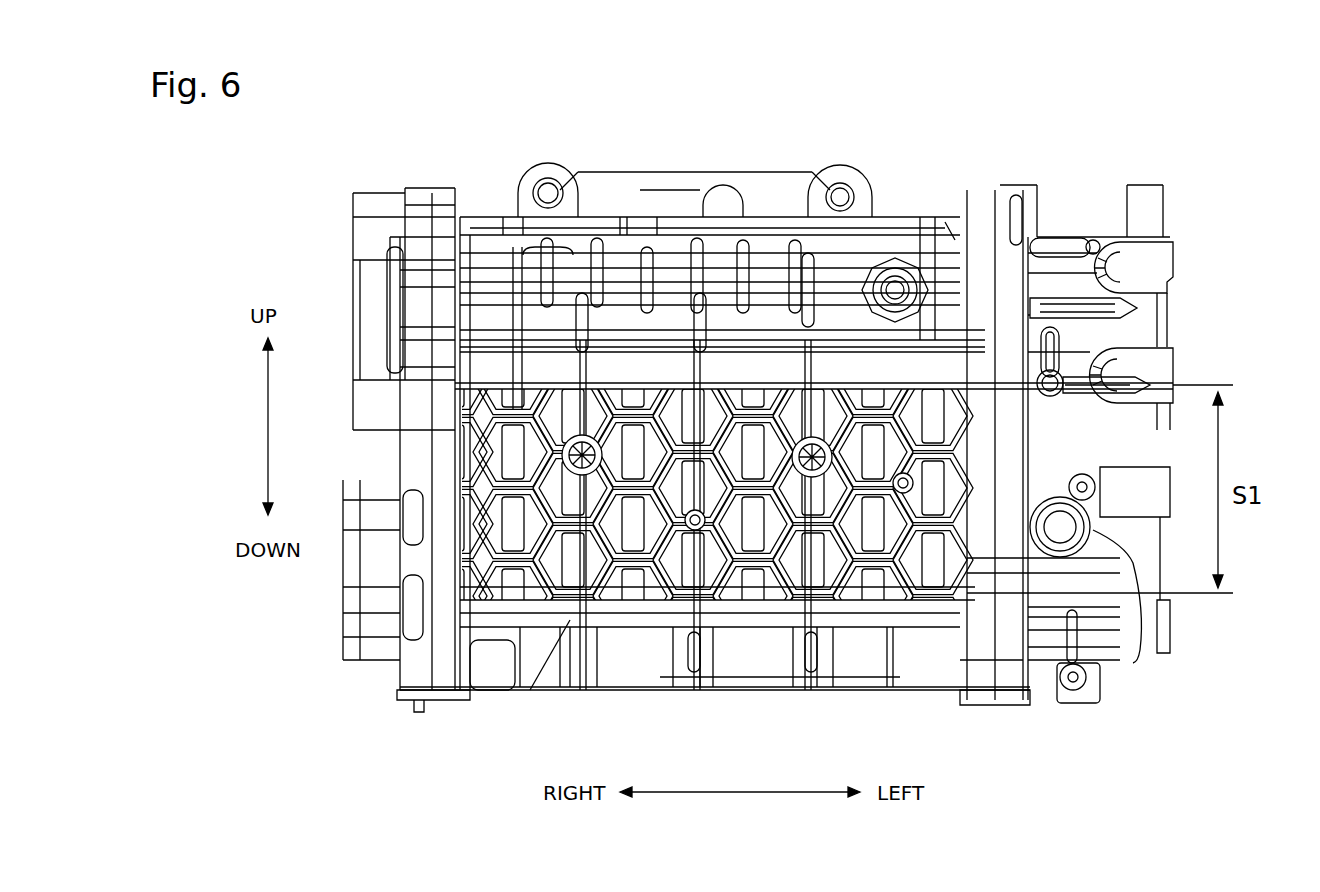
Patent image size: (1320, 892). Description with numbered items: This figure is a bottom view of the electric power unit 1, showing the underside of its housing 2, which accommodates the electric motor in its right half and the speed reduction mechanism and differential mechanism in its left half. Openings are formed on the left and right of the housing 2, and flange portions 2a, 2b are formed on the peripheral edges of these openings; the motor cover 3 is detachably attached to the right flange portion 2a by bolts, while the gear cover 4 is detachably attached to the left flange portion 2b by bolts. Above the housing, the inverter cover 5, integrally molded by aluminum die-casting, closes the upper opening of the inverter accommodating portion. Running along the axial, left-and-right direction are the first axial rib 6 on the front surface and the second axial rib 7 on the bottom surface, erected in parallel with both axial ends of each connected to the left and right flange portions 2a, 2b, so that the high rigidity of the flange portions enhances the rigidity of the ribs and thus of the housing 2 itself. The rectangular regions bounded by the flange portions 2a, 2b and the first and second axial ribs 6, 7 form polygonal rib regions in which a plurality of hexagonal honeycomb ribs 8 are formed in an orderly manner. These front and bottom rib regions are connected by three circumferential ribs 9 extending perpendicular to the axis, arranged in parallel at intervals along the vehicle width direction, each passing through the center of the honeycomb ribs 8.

The electric power unit 1 is at (756, 415).
The housing 2 is at (750, 700).
The right flange portion 2a is at (975, 705).
The left flange portion 2b is at (430, 702).
The motor cover 3 is at (365, 410).
The gear cover 4 is at (1172, 358).
The inverter cover 5 is at (885, 225).
The first axial rib 6 is at (728, 380).
The second axial rib 7 is at (660, 590).
The honeycomb ribs 8 is at (775, 585).
The circumferential ribs 9 is at (587, 373).